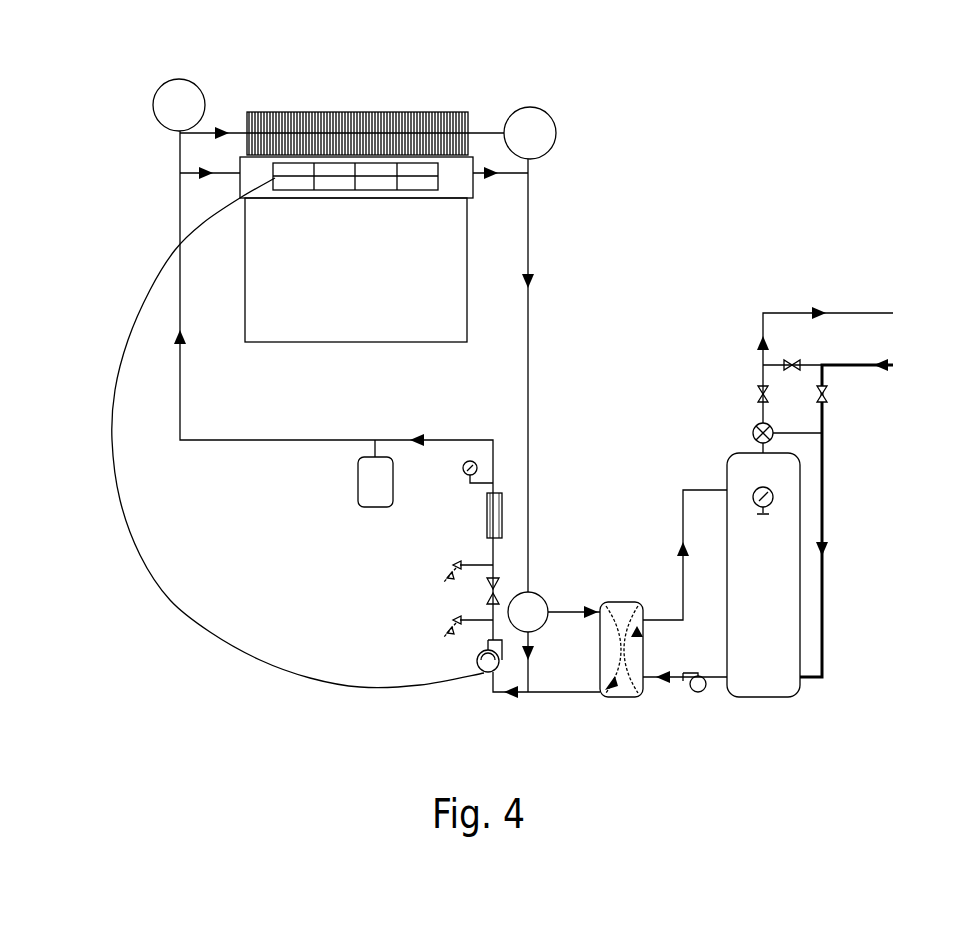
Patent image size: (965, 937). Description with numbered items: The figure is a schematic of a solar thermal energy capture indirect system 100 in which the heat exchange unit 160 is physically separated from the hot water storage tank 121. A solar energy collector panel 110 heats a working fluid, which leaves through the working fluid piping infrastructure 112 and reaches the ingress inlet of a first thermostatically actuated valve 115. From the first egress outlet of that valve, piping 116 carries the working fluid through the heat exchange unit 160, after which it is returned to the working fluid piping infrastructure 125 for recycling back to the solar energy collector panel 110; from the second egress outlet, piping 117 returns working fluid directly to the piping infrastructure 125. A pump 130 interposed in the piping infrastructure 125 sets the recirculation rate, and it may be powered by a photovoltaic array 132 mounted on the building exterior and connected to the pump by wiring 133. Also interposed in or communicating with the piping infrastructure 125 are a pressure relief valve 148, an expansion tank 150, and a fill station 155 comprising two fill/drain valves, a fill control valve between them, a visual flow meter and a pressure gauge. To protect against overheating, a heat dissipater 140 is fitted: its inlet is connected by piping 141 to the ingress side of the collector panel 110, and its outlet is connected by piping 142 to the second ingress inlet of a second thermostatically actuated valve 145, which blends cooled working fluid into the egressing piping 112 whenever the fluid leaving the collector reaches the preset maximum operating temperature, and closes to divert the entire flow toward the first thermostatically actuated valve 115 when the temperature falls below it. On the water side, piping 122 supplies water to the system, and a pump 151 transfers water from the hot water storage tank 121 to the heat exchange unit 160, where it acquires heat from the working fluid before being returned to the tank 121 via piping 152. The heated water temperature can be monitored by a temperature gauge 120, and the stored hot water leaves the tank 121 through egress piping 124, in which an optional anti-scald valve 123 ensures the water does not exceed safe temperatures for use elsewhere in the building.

The solar thermal energy capture indirect system 100 is at (740, 200).
The solar energy collector panel 110 is at (356, 249).
The working fluid piping infrastructure 112 is at (532, 212).
The first thermostatically actuated valve 115 is at (535, 592).
The piping 116 is at (558, 608).
The piping 117 is at (535, 636).
The temperature gauge 120 is at (770, 490).
The hot water storage tank 121 is at (800, 652).
The piping 122 is at (848, 366).
The anti-scald valve 123 is at (757, 425).
The egress piping 124 is at (775, 312).
The working fluid piping infrastructure 125 is at (178, 236).
The pump 130 is at (484, 674).
The photovoltaic array 132 is at (273, 165).
The wiring 133 is at (203, 622).
The heat dissipater 140 is at (322, 112).
The piping 141 is at (178, 147).
The piping 142 is at (482, 132).
The second thermostatically actuated valve 145 is at (552, 120).
The pressure relief valve 148 is at (182, 79).
The expansion tank 150 is at (352, 477).
The pump 151 is at (698, 692).
The piping 152 is at (703, 490).
The fill station 155 is at (432, 522).
The heat exchange unit 160 is at (620, 697).